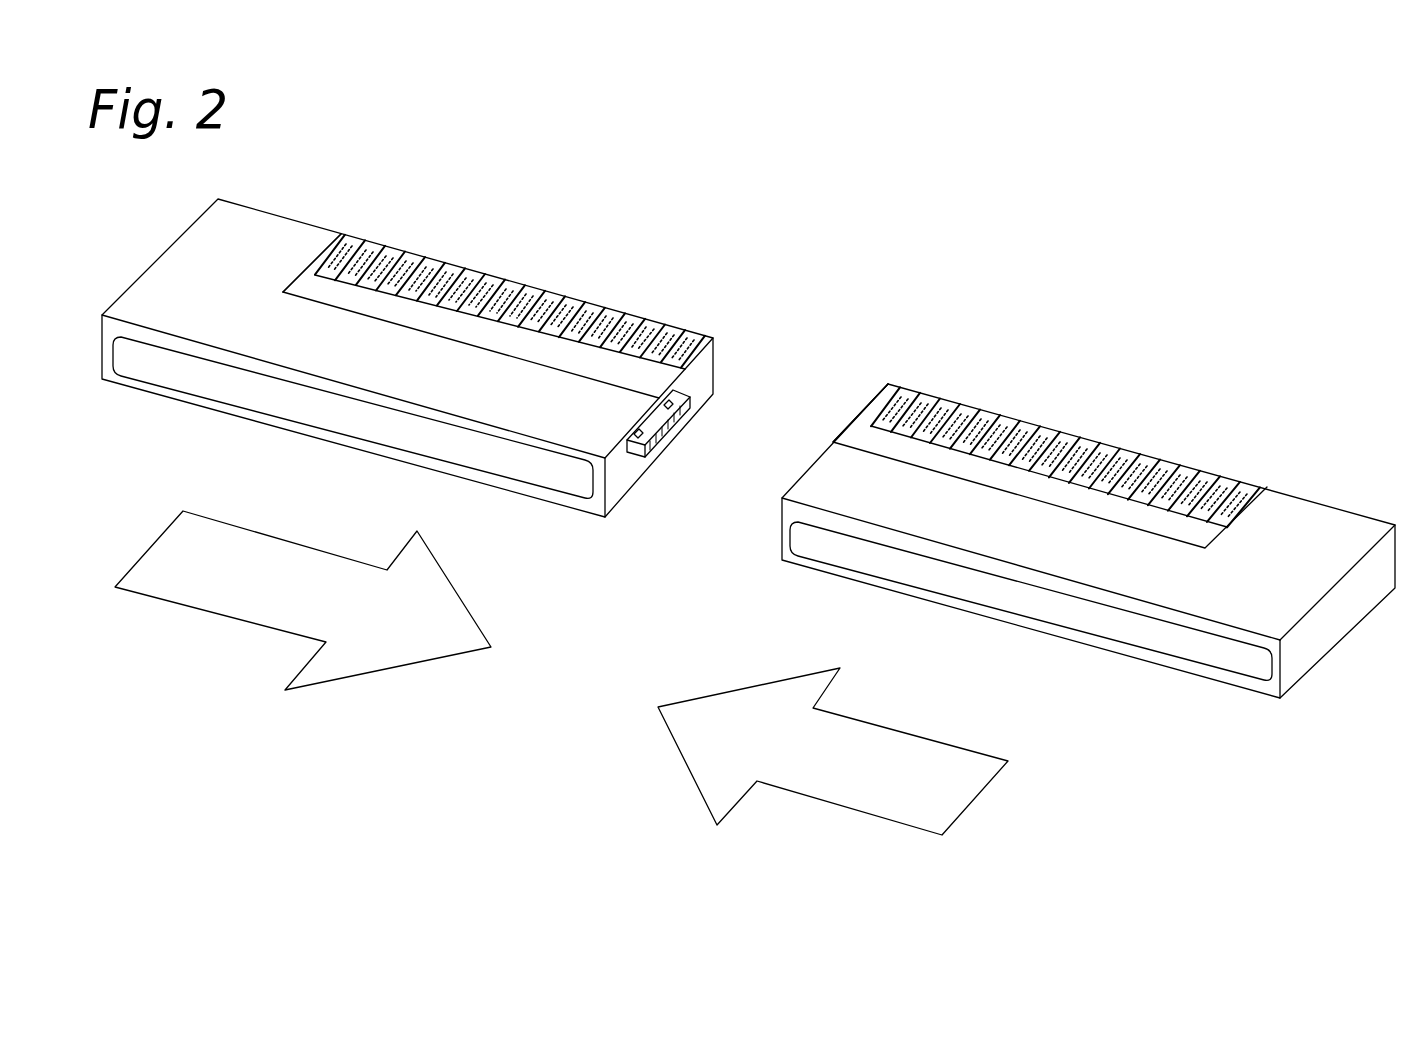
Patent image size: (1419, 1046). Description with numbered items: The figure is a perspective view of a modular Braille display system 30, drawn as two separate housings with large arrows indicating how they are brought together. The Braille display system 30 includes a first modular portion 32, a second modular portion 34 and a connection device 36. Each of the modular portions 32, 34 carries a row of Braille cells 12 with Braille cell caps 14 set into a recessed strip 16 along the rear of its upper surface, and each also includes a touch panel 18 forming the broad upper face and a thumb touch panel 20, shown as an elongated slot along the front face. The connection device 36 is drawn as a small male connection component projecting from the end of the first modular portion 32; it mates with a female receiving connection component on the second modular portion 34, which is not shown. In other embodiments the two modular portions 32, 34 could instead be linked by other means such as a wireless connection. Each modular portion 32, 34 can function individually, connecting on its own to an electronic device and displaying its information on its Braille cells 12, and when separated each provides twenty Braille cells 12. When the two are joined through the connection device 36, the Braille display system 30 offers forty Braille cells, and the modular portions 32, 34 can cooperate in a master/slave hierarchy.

The Braille cells 12 is at (528, 296).
The Braille cell caps 14 is at (627, 318).
The recess 16 is at (312, 288).
The touch panel 18 is at (173, 277).
The thumb touch panel 20 is at (177, 365).
The modular Braille display system 30 is at (1175, 380).
The first modular portion 32 is at (447, 245).
The second modular portion 34 is at (1242, 463).
The connection device 36 is at (665, 413).